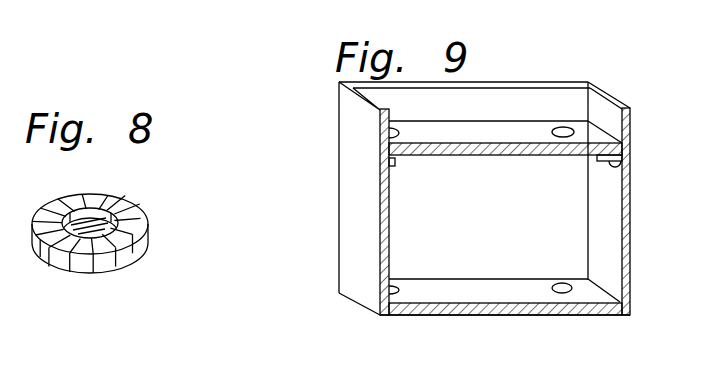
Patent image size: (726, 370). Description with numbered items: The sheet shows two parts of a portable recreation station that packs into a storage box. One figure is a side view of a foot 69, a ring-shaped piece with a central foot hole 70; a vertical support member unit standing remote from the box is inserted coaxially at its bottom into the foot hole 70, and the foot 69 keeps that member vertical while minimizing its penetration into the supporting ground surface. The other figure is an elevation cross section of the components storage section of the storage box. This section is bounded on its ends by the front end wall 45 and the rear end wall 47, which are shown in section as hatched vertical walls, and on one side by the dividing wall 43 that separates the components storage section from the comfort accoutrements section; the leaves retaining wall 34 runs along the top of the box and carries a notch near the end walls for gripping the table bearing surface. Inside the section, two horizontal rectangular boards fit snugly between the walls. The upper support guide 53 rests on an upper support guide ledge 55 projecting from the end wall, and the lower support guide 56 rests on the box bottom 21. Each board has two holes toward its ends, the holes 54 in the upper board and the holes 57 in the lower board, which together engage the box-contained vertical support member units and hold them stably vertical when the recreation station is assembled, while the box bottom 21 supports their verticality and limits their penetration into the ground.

In FIG. 8, the foot 69 is at (116, 262).
In FIG. 8, the foot hole 70 is at (89, 217).
In FIG. 9, the leaves retaining wall 34 is at (613, 100).
In FIG. 9, the hole 54 is at (610, 115).
In FIG. 9, the front end wall 45 is at (360, 200).
In FIG. 9, the dividing wall 43 is at (411, 222).
In FIG. 9, the rear end wall 47 is at (632, 242).
In FIG. 9, the upper support guide 53 is at (518, 132).
In FIG. 9, the upper support guide ledge 55 is at (623, 167).
In FIG. 9, the lower support guide 56 is at (493, 293).
In FIG. 9, the box bottom 21 is at (413, 317).
In FIG. 9, the hole 57 is at (572, 288).